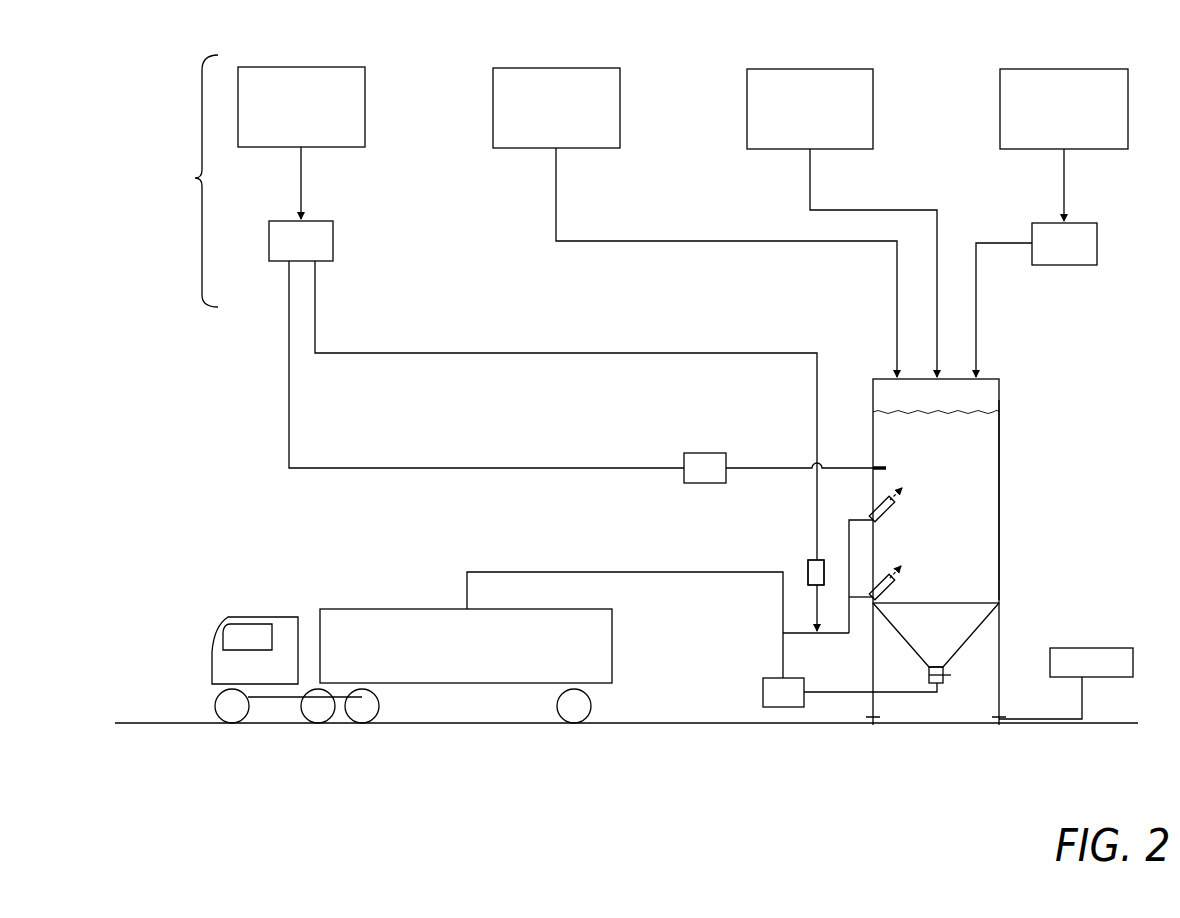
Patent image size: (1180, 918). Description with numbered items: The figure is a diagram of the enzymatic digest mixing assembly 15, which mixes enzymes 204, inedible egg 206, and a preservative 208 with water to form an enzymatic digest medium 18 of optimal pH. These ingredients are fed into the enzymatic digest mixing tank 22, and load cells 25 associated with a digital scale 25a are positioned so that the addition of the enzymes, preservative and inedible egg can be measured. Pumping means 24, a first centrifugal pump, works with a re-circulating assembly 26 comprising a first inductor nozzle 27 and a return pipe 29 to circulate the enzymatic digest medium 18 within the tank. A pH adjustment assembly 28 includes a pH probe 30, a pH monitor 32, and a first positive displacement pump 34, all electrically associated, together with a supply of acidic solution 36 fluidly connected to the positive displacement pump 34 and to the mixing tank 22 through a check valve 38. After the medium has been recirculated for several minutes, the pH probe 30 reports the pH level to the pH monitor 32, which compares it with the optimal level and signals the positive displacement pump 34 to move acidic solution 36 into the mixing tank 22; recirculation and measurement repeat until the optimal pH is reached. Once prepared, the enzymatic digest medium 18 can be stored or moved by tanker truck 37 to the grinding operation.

The enzymatic digest mixing assembly 15 is at (222, 327).
The enzymatic digest medium 18 is at (957, 450).
The enzymatic digest mixing tank 22 is at (999, 478).
The pumping means 24 is at (813, 558).
The load cells 25 is at (999, 725).
The digital scale 25a is at (1092, 648).
The re-circulating assembly 26 is at (806, 633).
The first inductor nozzle 27 is at (888, 592).
The pH adjustment assembly 28 is at (188, 186).
The return pipe 29 is at (838, 692).
The pH probe 30 is at (885, 468).
The pH monitor 32 is at (706, 453).
The first positive displacement pump 34 is at (328, 221).
The supply of acidic solution 36 is at (301, 67).
The tanker truck 37 is at (500, 609).
The check valve 38 is at (817, 558).
The enzymes 204 is at (800, 69).
The inedible egg 206 is at (1057, 69).
The preservative 208 is at (546, 68).